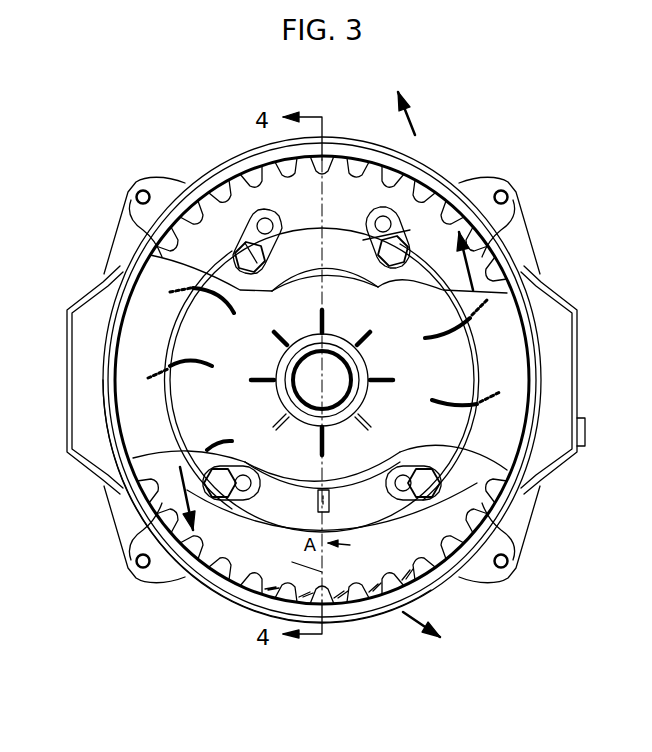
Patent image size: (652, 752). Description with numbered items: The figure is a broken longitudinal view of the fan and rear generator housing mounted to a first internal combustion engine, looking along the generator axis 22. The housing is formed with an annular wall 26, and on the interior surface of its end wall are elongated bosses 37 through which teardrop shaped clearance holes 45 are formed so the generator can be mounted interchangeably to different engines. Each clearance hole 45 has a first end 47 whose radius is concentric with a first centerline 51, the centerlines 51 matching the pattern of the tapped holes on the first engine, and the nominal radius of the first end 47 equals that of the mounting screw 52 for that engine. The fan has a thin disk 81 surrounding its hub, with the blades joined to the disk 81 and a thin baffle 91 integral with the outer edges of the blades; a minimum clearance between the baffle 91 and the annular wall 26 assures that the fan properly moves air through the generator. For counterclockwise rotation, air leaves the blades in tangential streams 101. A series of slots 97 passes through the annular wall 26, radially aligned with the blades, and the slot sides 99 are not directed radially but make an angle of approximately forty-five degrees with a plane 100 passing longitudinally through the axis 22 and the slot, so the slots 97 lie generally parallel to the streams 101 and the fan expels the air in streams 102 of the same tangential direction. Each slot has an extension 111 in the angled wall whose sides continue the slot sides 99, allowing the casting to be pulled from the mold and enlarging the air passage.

The generator axis 22 is at (328, 370).
The annular wall 26 is at (217, 593).
The elongated bosses 37 is at (428, 237).
The clearance holes 45 is at (270, 232).
The first end 47 is at (247, 200).
The first centerline 51 is at (405, 245).
The mounting screw 52 is at (268, 290).
The disk 81 is at (236, 401).
The baffle 91 is at (510, 340).
The slots 97 is at (259, 574).
The slot sides 99 is at (330, 592).
The plane 100 is at (327, 460).
The air streams 101 is at (467, 267).
The air streams 102 is at (413, 125).
The slot extensions 111 is at (217, 180).